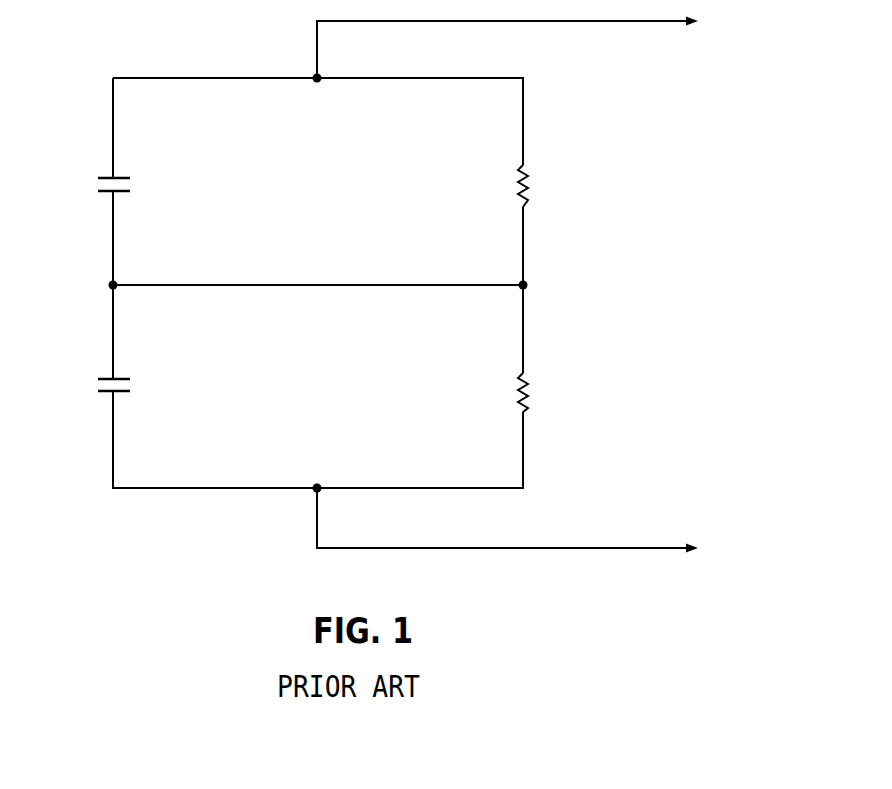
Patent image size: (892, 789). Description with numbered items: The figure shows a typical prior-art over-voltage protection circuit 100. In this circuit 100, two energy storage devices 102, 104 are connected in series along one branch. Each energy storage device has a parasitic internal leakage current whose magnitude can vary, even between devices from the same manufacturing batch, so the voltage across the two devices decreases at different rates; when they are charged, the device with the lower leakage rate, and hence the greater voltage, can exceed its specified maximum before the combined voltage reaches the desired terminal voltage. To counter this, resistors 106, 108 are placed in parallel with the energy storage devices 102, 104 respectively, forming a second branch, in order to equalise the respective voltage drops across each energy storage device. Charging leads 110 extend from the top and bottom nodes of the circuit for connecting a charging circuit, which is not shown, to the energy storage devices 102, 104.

The over-voltage protection circuit 100 is at (763, 278).
The energy storage device 102 is at (83, 185).
The energy storage device 104 is at (83, 385).
The resistor 106 is at (561, 186).
The resistor 108 is at (561, 393).
The charging leads 110 is at (542, 285).